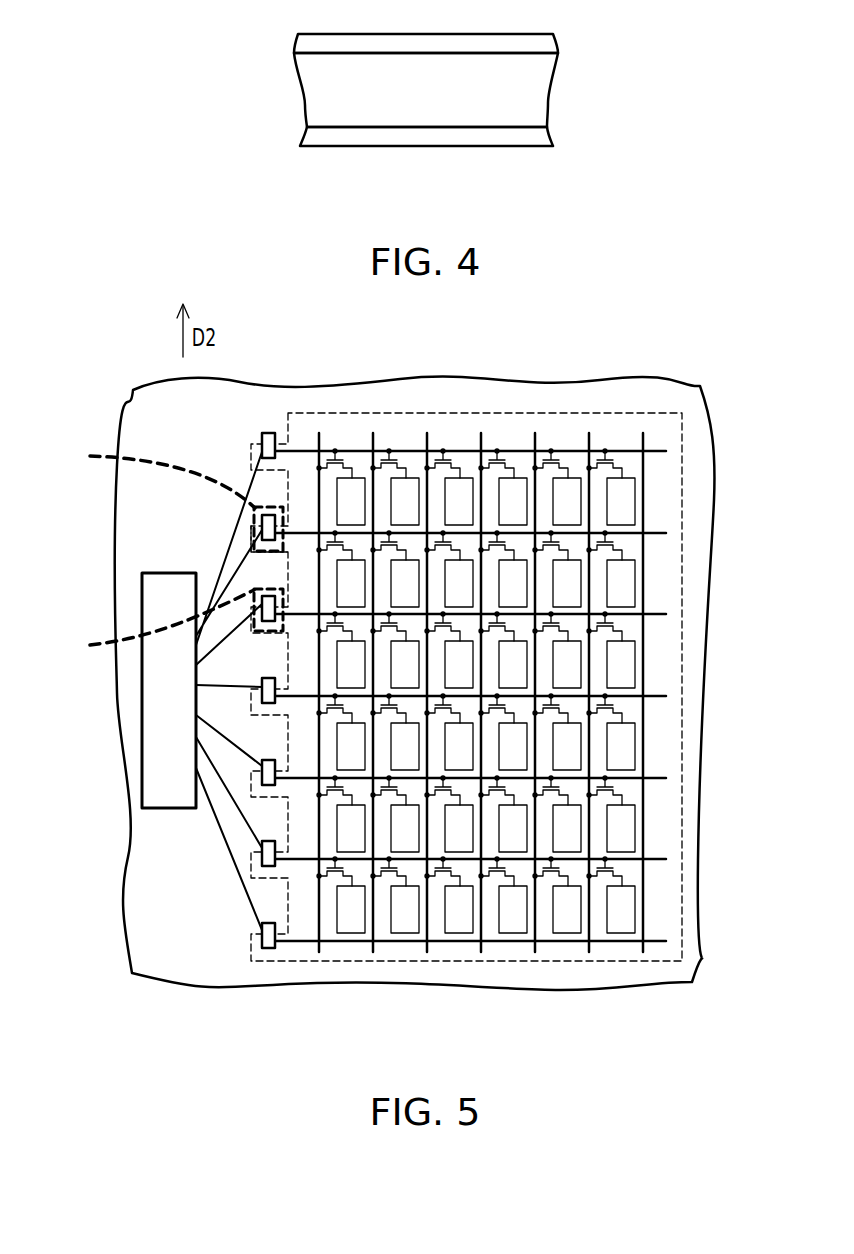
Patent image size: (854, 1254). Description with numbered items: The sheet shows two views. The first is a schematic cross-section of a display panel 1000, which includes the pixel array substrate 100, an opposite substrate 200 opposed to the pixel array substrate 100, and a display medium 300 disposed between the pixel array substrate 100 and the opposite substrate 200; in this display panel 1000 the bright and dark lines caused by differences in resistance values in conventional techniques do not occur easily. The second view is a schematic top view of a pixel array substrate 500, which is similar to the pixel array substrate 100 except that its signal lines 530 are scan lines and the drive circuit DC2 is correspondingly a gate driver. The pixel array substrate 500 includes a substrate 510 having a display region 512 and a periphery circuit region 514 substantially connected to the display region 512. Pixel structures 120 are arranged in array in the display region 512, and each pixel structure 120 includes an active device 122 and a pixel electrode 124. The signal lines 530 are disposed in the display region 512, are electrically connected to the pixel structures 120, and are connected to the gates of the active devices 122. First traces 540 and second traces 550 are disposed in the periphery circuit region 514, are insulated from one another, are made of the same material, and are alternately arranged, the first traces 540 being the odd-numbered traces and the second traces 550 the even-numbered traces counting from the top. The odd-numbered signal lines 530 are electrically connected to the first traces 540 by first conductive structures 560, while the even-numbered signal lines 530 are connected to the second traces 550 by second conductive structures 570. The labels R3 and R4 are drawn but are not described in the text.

In FIG. 4, the pixel array substrate 100 is at (538, 135).
In FIG. 4, the opposite substrate 200 is at (546, 45).
In FIG. 4, the display medium 300 is at (533, 97).
In FIG. 4, the display panel 1000 is at (457, 112).
In FIG. 5, the pixel array substrate 500 is at (715, 1032).
In FIG. 5, the substrate 510 is at (415, 737).
In FIG. 5, the display region 512 is at (265, 963).
In FIG. 5, the periphery circuit region 514 is at (185, 925).
In FIG. 5, the pixel structure 120 is at (704, 484).
In FIG. 5, the active device 122 is at (626, 462).
In FIG. 5, the pixel electrode 124 is at (628, 507).
In FIG. 5, the signal line 530 is at (655, 535).
In FIG. 5, the first trace 540 is at (255, 508).
In FIG. 5, the second trace 550 is at (251, 556).
In FIG. 5, the first conductive structure 560 is at (262, 435).
In FIG. 5, the second conductive structure 570 is at (262, 518).
In FIG. 5, the third repair line R3 is at (155, 625).
In FIG. 5, the fourth repair line R4 is at (156, 475).
In FIG. 5, the drive circuit DC2 is at (160, 720).